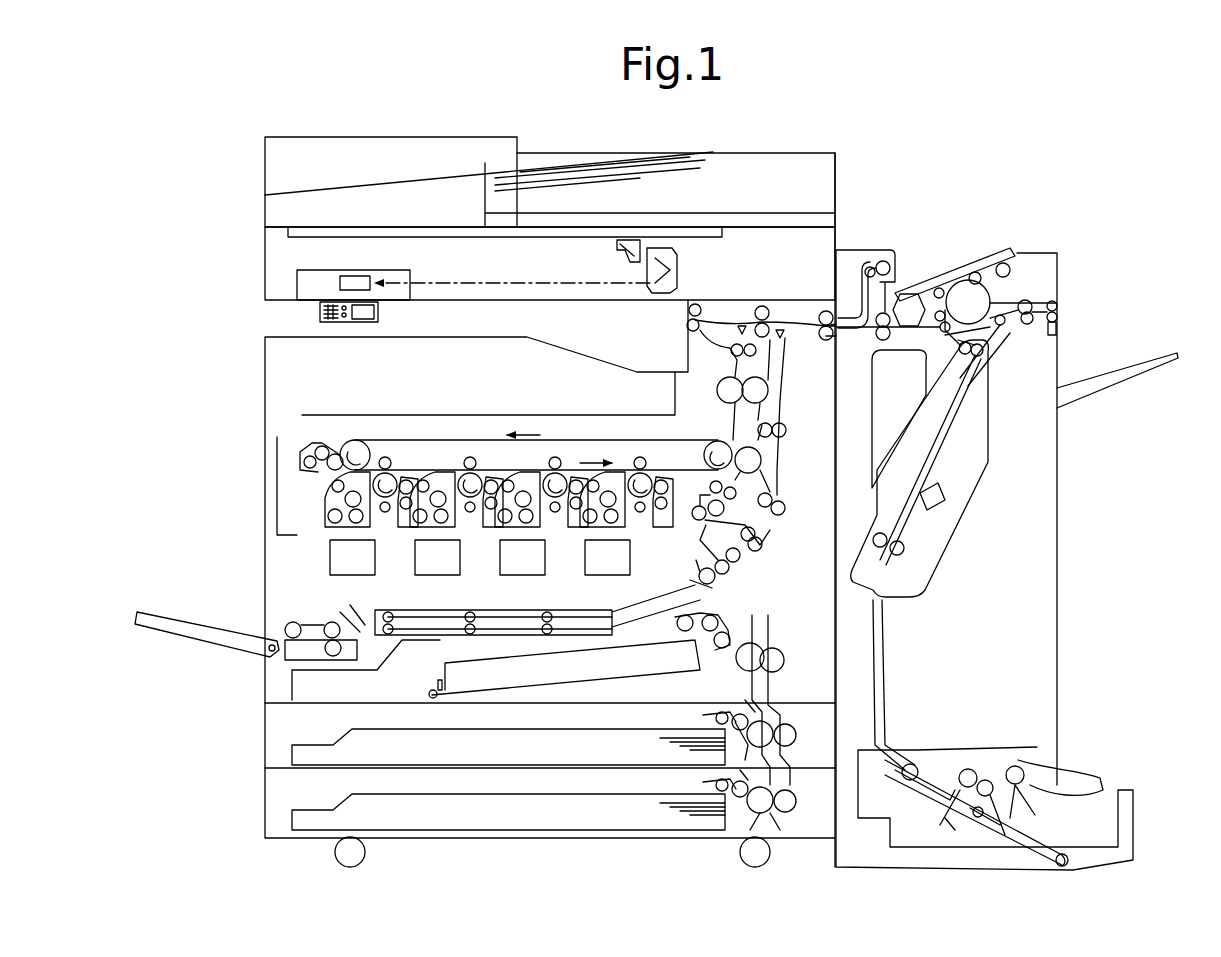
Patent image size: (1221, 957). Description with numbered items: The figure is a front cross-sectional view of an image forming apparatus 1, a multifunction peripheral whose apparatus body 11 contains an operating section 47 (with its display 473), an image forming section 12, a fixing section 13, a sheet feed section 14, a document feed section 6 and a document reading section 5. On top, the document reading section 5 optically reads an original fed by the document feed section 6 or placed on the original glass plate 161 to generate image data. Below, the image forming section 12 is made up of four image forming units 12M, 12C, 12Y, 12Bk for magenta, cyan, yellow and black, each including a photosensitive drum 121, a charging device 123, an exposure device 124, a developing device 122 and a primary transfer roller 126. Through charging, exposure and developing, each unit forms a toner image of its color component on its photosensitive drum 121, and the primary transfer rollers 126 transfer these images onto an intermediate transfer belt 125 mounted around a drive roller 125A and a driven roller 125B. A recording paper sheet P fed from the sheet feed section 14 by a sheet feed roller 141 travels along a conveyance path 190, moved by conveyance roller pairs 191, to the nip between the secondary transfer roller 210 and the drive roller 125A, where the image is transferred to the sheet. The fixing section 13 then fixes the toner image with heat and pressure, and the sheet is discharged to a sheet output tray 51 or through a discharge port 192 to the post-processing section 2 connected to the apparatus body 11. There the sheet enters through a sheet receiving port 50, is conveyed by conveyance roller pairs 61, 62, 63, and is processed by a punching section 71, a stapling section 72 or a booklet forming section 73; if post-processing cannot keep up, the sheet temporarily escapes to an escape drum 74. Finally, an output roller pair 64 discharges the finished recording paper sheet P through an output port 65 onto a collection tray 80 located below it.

The image forming apparatus 1 is at (190, 207).
The post-processing section 2 is at (1011, 515).
The document reading section 5 is at (262, 262).
The document feed section 6 is at (410, 131).
The apparatus body 11 is at (260, 405).
The image forming section 12 is at (477, 469).
The image forming unit for magenta 12M is at (356, 469).
The image forming unit for cyan 12C is at (470, 456).
The image forming unit for yellow 12Y is at (552, 456).
The image forming unit for black 12Bk is at (630, 456).
The fixing section 13 is at (775, 384).
The sheet feed section 14 is at (488, 726).
The operating section 47 is at (339, 318).
The display unit 473 is at (378, 316).
The sheet receiving port 50 is at (839, 316).
The sheet output tray 51 is at (616, 372).
The conveyance roller pair 61 is at (884, 312).
The conveyance roller pair 62 is at (960, 282).
The conveyance roller pair 63 is at (1025, 300).
The output roller pair 64 is at (1058, 300).
The output port 65 is at (1062, 312).
The punching section 71 is at (915, 295).
The stapling section 72 is at (955, 492).
The booklet forming section 73 is at (1073, 783).
The escape drum 74 is at (1002, 262).
The collection tray 80 is at (1165, 352).
The photosensitive drum 121 is at (390, 458).
The developing device 122 is at (334, 484).
The charging device 123 is at (374, 529).
The exposure device 124 is at (330, 560).
The intermediate transfer belt 125 is at (350, 446).
The drive roller 125A is at (706, 451).
The driven roller 125B is at (342, 446).
The primary transfer roller 126 is at (403, 478).
The sheet feed roller 141 is at (737, 612).
The original glass plate 161 is at (400, 236).
The conveyance path 190 is at (770, 453).
The conveyance roller pair 191 is at (826, 311).
The discharge port 192 is at (821, 344).
The secondary transfer roller 210 is at (770, 481).
The recording paper sheet P is at (447, 664).